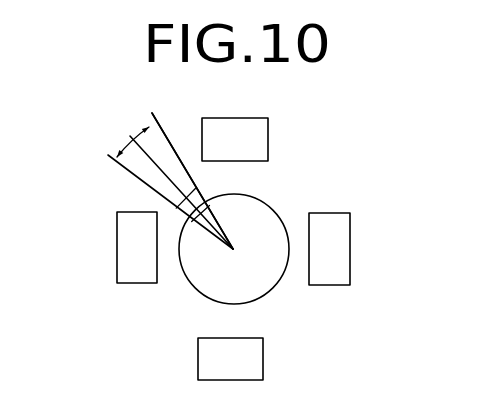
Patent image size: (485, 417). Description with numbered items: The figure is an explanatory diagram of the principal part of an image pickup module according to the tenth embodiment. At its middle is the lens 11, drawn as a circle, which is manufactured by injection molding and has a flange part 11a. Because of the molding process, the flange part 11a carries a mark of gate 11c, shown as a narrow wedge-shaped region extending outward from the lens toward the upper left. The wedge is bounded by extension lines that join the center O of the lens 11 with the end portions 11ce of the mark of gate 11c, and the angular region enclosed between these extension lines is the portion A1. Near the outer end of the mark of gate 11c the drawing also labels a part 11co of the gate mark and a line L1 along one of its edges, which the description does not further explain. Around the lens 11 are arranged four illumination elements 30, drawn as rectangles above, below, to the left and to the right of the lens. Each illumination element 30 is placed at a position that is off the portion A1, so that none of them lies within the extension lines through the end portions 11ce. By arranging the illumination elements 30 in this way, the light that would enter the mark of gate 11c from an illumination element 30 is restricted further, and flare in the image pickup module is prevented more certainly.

The lens 11 is at (238, 265).
The flange part 11a is at (262, 292).
The mark of gate 11c is at (183, 170).
The end portions of the mark of gate 11ce is at (190, 216).
The bottom portion of cut-out 11co is at (200, 192).
The illumination element 30 is at (253, 135).
The center of the lens O is at (234, 249).
The portion defined by extension lines A1 is at (146, 128).
The reference line of cut-out edge L1 is at (158, 112).